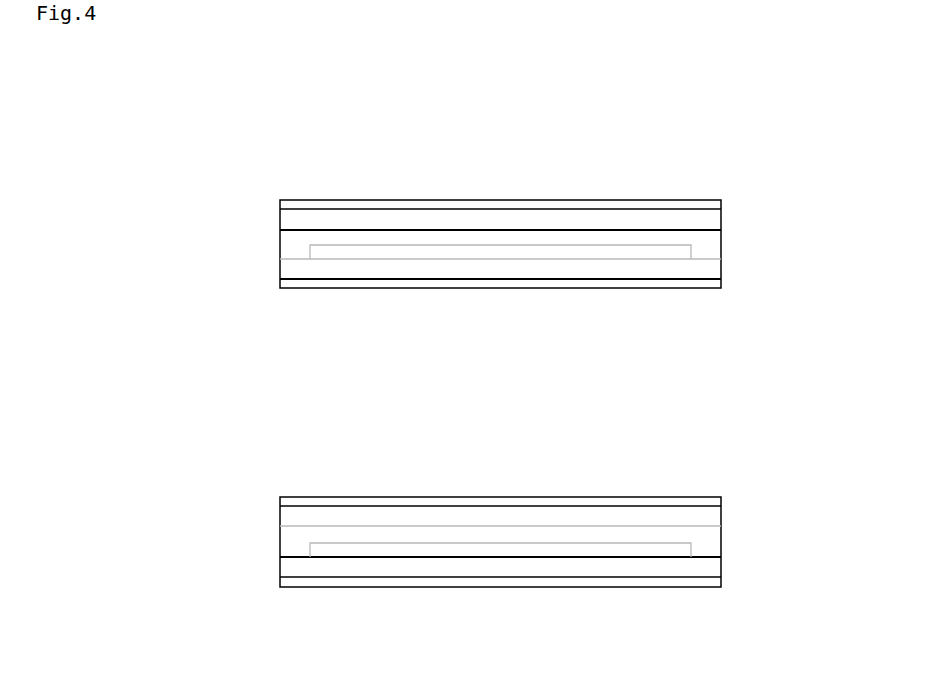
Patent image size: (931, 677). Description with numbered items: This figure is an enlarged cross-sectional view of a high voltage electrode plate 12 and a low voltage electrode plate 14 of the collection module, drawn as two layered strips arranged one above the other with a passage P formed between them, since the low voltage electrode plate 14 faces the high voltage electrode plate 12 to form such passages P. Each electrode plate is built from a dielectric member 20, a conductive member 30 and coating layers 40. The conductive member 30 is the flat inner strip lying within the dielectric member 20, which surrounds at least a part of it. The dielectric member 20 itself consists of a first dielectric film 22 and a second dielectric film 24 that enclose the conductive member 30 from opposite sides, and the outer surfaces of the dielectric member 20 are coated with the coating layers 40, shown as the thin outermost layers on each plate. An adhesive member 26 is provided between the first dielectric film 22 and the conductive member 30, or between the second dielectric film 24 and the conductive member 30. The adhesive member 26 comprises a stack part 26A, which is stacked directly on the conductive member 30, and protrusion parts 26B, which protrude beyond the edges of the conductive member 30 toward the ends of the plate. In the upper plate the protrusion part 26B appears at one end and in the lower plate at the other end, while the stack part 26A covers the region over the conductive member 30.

The high voltage electrode plate 12 is at (722, 186).
The low voltage electrode plate 14 is at (722, 484).
The dielectric member 20 is at (217, 205).
The first dielectric film 22 is at (285, 277).
The second dielectric film 24 is at (285, 214).
The adhesive member 26 is at (285, 246).
The stack part 26A is at (398, 240).
The protrusion part 26B is at (297, 253).
The conductive member 30 is at (382, 253).
The coating layer 40 is at (689, 204).
The passage P is at (652, 372).